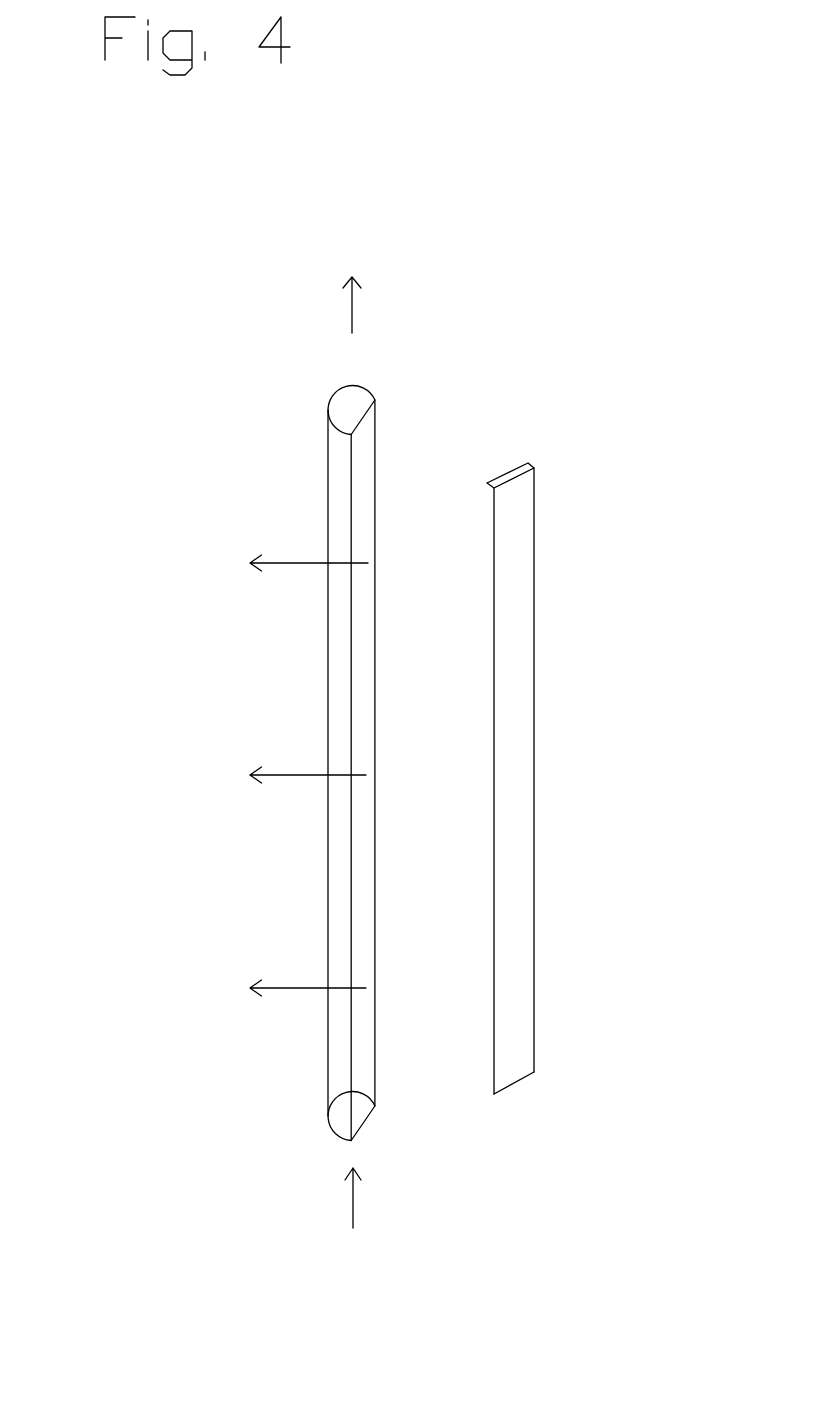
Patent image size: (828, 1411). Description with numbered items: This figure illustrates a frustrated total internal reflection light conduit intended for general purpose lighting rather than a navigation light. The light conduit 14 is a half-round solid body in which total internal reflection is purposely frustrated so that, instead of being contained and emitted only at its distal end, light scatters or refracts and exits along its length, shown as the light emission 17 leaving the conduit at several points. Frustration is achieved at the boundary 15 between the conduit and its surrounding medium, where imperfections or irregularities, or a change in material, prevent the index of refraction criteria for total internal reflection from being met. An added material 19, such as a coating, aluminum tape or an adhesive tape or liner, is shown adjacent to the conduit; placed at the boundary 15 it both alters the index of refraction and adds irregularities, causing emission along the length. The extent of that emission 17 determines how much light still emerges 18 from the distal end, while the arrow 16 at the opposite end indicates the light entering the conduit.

The light conduit 14 is at (294, 681).
The boundary 15 is at (383, 445).
The inlet flow direction 16 is at (365, 1242).
The light emission along the length 17 is at (246, 775).
The light emerging from the distal end 18 is at (362, 263).
The added material 19 is at (548, 441).